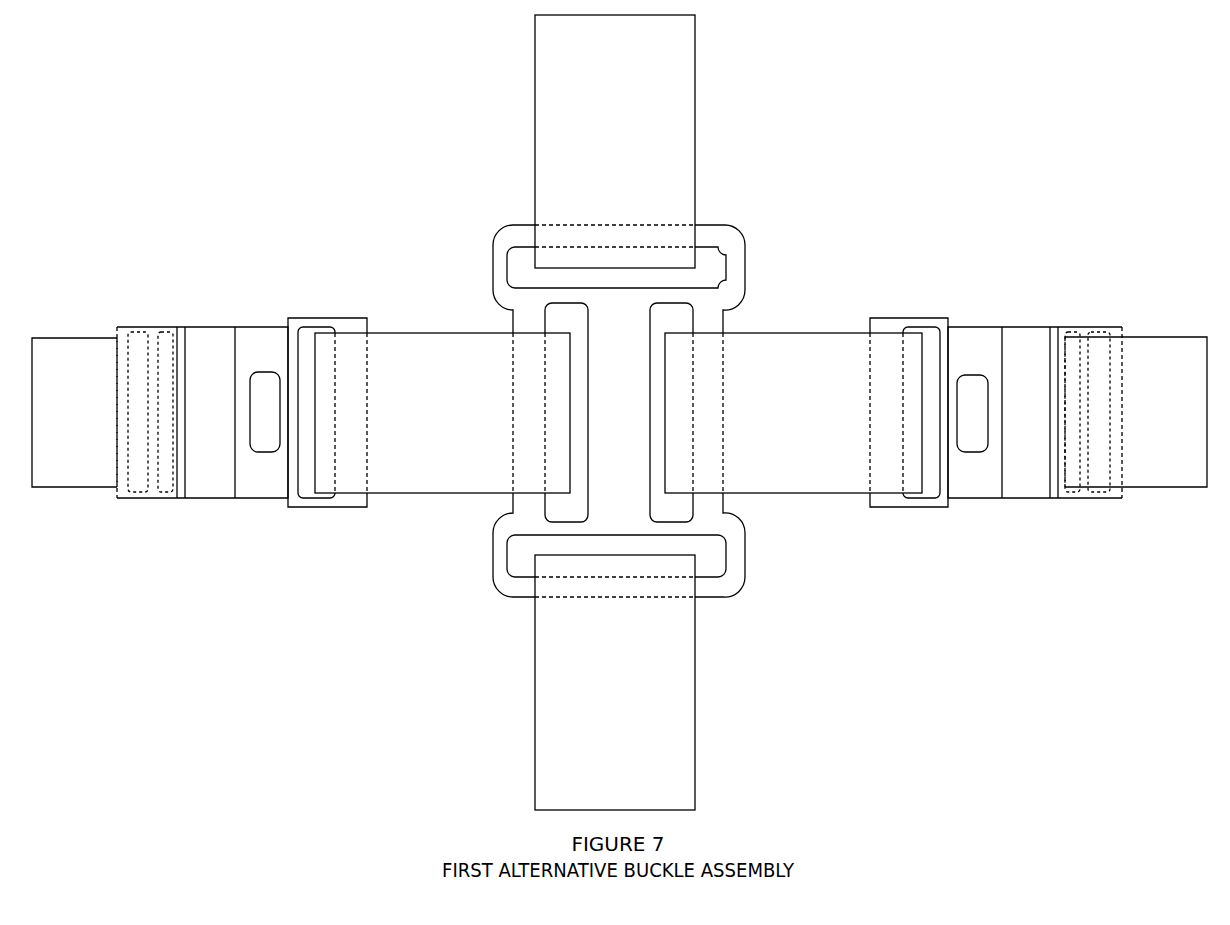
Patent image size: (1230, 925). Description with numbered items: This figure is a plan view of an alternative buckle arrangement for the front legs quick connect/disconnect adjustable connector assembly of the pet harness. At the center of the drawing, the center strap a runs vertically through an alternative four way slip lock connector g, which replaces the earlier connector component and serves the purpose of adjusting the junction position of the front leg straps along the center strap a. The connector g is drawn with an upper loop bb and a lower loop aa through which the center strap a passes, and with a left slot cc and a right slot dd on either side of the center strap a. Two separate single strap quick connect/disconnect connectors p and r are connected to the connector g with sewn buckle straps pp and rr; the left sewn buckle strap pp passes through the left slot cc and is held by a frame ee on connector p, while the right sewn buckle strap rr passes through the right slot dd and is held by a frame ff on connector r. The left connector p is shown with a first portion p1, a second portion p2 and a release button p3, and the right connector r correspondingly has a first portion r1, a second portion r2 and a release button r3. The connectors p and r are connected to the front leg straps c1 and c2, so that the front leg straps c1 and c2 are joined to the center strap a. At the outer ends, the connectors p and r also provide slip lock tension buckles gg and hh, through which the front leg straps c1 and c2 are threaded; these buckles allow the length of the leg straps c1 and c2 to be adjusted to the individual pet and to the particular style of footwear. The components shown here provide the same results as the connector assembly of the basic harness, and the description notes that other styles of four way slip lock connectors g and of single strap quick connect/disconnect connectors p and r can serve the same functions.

The center strap a is at (615, 412).
The four way slip lock connector g is at (613, 405).
The lower strap loop of buckle body aa is at (520, 570).
The upper strap loop of buckle body bb is at (523, 255).
The left slot of buckle body cc is at (565, 508).
The right slot of buckle body dd is at (678, 325).
The sewn buckle strap pp is at (443, 343).
The sewn buckle strap rr is at (803, 343).
The left strap frame ee is at (307, 338).
The right strap frame ff is at (935, 333).
The single strap quick connect/disconnect connector p is at (207, 409).
The first portion of left side release buckle p1 is at (217, 490).
The second portion of left side release buckle p2 is at (242, 495).
The release button of left side release buckle p3 is at (273, 442).
The slip lock tension buckle gg is at (159, 339).
The front leg strap c1 is at (74, 412).
The single strap quick connect/disconnect connector r is at (1033, 407).
The first portion of right side release buckle r1 is at (1021, 490).
The second portion of right side release buckle r2 is at (992, 495).
The release button of right side release buckle r3 is at (967, 440).
The slip lock tension buckle hh is at (1073, 335).
The front leg strap c2 is at (1136, 412).